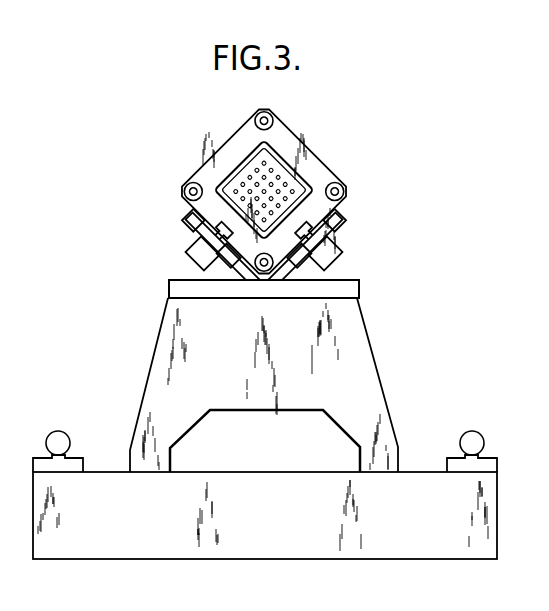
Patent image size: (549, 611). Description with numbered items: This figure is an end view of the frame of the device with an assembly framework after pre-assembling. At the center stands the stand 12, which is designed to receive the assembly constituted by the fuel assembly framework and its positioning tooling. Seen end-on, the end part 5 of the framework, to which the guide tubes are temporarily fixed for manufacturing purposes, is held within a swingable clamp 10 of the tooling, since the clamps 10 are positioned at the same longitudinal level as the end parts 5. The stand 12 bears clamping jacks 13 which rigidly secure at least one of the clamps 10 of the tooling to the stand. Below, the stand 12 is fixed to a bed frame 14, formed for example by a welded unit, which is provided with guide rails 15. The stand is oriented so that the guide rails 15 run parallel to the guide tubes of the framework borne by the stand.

The end part 5 is at (240, 162).
The swingable clamp 10 is at (295, 147).
The stand 12 is at (345, 343).
The clamping jacks 13 is at (195, 247).
The bed frame 14 is at (416, 462).
The guide rails 15 is at (64, 434).